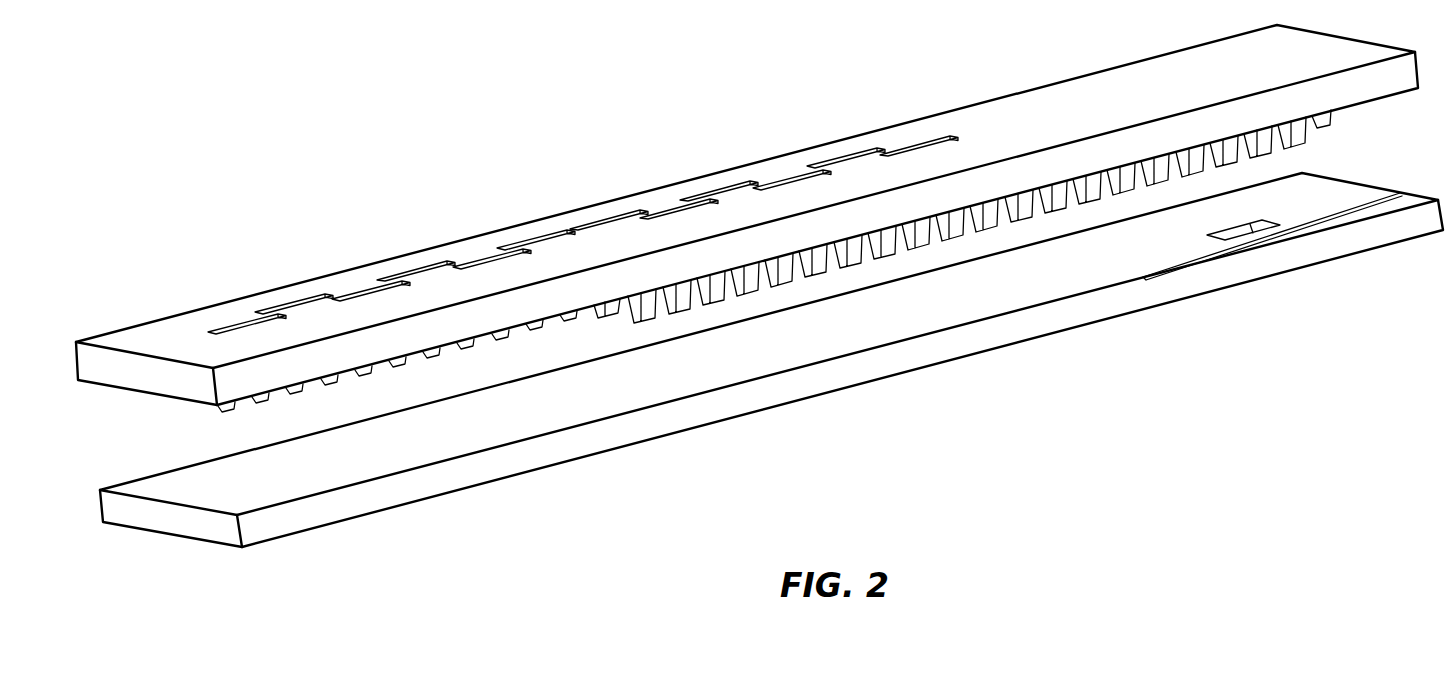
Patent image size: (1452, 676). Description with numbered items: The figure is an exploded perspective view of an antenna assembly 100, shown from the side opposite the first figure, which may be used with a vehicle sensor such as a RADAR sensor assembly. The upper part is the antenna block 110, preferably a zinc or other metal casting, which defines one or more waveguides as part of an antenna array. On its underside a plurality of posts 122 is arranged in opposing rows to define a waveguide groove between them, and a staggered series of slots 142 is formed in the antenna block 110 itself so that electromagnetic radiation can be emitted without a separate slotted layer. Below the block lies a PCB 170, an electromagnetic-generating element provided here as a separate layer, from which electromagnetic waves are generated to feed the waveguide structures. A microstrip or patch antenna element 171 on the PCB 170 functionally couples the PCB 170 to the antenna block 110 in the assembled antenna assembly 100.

The antenna assembly 100 is at (673, 103).
The antenna block 110 is at (747, 218).
The posts 122 is at (606, 322).
The slots 142 is at (797, 175).
The PCB 170 is at (771, 360).
The patch antenna element 171 is at (1254, 230).